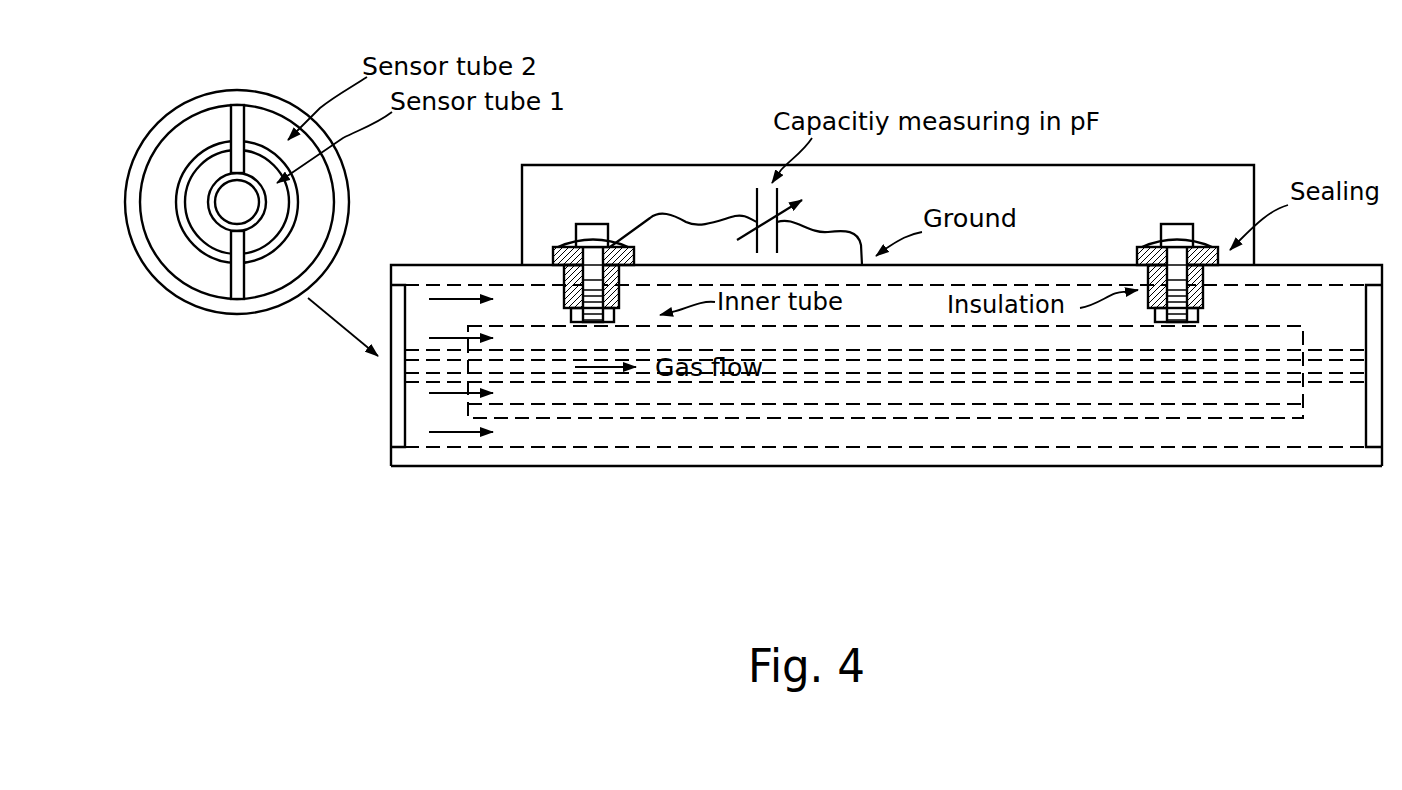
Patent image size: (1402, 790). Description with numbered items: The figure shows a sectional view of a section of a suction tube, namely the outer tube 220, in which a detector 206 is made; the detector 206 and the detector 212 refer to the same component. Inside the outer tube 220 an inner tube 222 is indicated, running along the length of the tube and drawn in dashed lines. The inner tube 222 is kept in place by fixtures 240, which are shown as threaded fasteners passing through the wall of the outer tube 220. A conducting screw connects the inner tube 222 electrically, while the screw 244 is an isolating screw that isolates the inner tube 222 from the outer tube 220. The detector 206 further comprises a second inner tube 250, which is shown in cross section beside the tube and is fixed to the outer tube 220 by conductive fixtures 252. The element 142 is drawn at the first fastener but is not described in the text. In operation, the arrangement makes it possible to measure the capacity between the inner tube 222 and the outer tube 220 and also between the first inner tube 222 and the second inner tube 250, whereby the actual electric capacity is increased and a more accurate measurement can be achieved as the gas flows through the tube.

The first sensor electrode 142 is at (631, 201).
The fixture 240 is at (634, 255).
The detector 206 is at (475, 258).
The detector 212 is at (672, 458).
The tube 220 is at (1082, 280).
The inner tube 222 is at (978, 412).
The isolating screw 244 is at (1182, 222).
The second inner tube 250 is at (190, 310).
The conductive fixture 252 is at (323, 223).